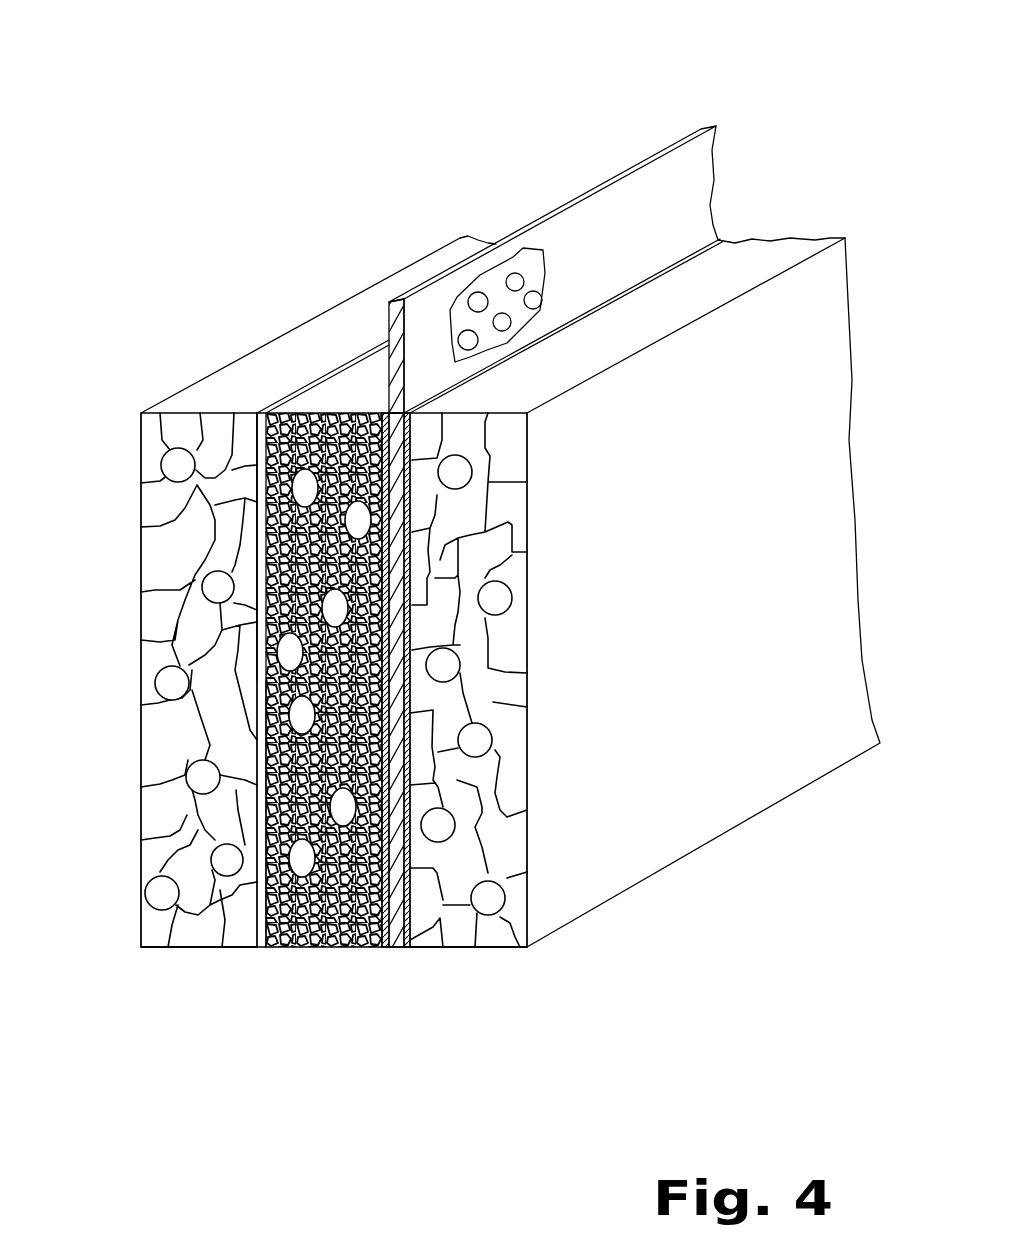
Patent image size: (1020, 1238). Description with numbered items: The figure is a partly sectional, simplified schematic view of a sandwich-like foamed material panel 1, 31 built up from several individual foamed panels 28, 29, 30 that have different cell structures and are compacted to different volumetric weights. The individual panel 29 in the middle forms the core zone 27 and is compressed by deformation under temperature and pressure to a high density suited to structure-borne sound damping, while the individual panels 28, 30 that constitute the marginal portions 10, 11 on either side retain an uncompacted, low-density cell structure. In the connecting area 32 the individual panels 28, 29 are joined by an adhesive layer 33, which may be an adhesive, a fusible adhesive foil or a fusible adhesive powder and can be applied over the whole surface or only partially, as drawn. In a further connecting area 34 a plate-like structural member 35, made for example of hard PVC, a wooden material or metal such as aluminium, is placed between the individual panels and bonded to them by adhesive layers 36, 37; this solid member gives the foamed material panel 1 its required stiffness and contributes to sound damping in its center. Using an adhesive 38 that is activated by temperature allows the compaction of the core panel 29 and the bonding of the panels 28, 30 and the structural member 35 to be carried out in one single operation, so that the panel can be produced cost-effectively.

The foamed material panel 1 is at (800, 105).
The marginal portion 10 is at (145, 1000).
The marginal portion 11 is at (522, 968).
The core zone 27 is at (348, 380).
The individual panel 28 is at (181, 965).
The individual panel 29 is at (325, 968).
The individual panel 30 is at (476, 975).
The foamed material panel 31 is at (165, 265).
The connecting area 32 is at (257, 965).
The adhesive layer 33 is at (263, 517).
The connecting area 34 is at (394, 968).
The plate-like structural member 35 is at (630, 200).
The adhesive layer 36 is at (383, 950).
The adhesive layer 37 is at (412, 948).
The adhesive 38 is at (263, 787).